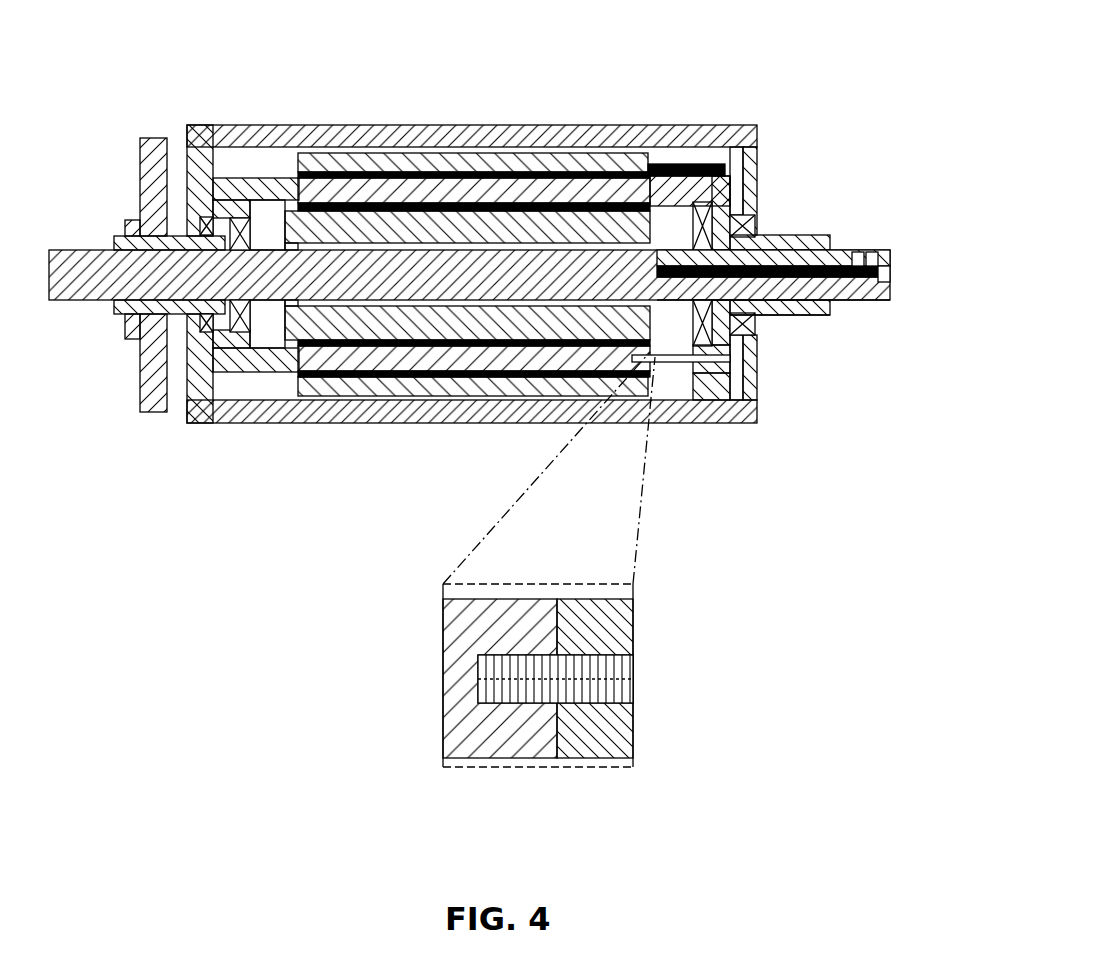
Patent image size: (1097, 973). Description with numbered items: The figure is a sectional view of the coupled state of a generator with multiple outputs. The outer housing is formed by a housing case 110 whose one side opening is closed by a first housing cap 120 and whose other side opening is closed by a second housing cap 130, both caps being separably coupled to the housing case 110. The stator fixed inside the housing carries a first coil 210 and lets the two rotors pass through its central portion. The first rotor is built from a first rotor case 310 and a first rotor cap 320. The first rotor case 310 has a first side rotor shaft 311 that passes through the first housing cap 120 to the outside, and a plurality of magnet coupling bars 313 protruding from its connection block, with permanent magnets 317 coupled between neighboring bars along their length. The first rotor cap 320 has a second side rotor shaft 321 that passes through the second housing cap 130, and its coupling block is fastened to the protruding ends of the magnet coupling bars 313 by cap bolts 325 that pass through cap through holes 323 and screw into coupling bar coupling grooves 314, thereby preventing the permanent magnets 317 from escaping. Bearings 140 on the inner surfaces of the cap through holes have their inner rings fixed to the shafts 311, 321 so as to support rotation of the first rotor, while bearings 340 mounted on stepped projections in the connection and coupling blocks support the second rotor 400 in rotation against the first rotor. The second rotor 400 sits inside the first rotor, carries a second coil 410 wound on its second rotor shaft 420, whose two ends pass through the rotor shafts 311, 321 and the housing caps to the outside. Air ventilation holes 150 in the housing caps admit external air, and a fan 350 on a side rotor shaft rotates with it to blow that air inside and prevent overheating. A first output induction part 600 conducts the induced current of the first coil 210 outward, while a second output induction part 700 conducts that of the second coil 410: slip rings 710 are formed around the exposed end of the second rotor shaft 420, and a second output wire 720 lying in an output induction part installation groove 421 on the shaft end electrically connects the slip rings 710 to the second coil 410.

The housing case 110 is at (413, 135).
The first housing cap 120 is at (200, 145).
The second housing cap 130 is at (750, 127).
The bearings 140 is at (748, 330).
The air ventilation holes 150 is at (212, 163).
The first coil 210 is at (513, 163).
The first rotor case 310 is at (248, 377).
The first side rotor shaft 311 is at (138, 312).
The magnet coupling bars 313 is at (468, 628).
The coupling bar coupling grooves 314 is at (480, 683).
The permanent magnets 317 is at (343, 363).
The first rotor cap 320 is at (712, 382).
The second side rotor shaft 321 is at (810, 317).
The cap through holes 323 is at (615, 665).
The cap bolts 325 is at (730, 360).
The bearings 340 is at (700, 377).
The fan 350 is at (155, 138).
The second rotor 400 is at (98, 238).
The second coil 410 is at (416, 338).
The second rotor shaft 420 is at (93, 299).
The output induction part installation groove 421 is at (848, 283).
The first output induction part 600 is at (681, 167).
The second output induction part 700 is at (893, 240).
The slip rings 710 is at (880, 250).
The second output wire 720 is at (765, 265).